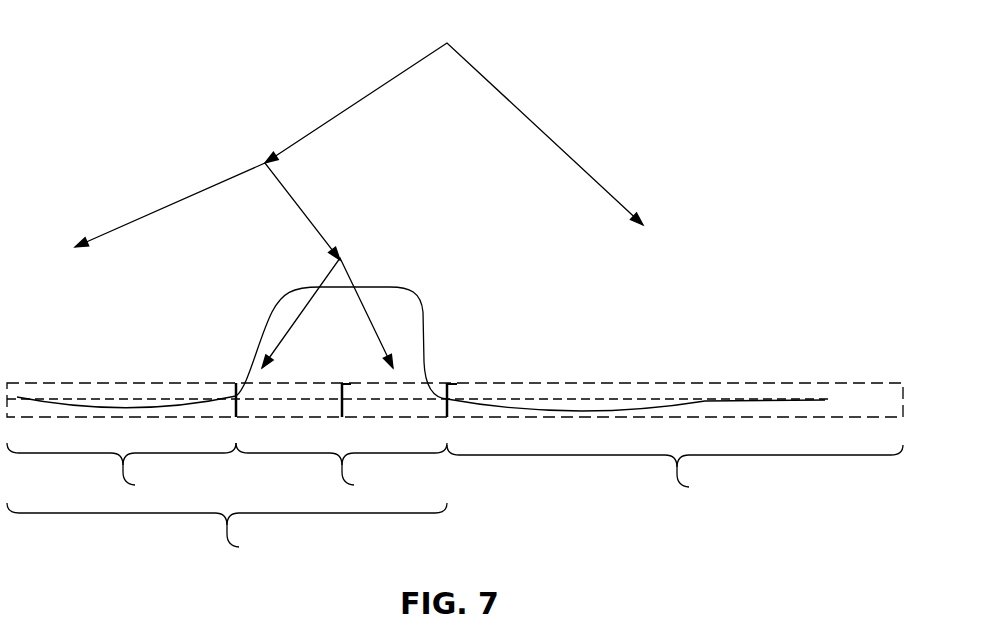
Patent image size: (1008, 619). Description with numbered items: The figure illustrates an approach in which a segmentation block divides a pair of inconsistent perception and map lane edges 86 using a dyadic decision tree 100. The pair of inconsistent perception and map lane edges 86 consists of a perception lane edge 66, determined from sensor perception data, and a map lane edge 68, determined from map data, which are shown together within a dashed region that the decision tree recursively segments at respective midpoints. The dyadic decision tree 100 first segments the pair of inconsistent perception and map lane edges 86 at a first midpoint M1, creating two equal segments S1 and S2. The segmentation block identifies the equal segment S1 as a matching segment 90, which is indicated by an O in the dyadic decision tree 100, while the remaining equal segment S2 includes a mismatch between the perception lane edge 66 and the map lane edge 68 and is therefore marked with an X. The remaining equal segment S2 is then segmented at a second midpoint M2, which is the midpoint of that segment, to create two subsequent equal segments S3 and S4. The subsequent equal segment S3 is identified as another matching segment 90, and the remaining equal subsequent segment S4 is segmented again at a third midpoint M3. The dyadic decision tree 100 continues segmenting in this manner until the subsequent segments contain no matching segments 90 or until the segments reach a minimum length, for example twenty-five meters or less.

The dyadic decision tree 100 is at (597, 85).
The pair of inconsistent perception and map lane edges 86 is at (860, 365).
The matching segment 90 is at (110, 383).
The perception lane edge 66 is at (413, 289).
The map lane edge 68 is at (603, 400).
The first midpoint M1 is at (449, 398).
The second midpoint M2 is at (236, 395).
The third midpoint M3 is at (342, 386).
The equal segment S1 is at (675, 474).
The remaining equal segment S2 is at (227, 534).
The subsequent equal segment S3 is at (121, 473).
The remaining equal subsequent segment S4 is at (341, 473).